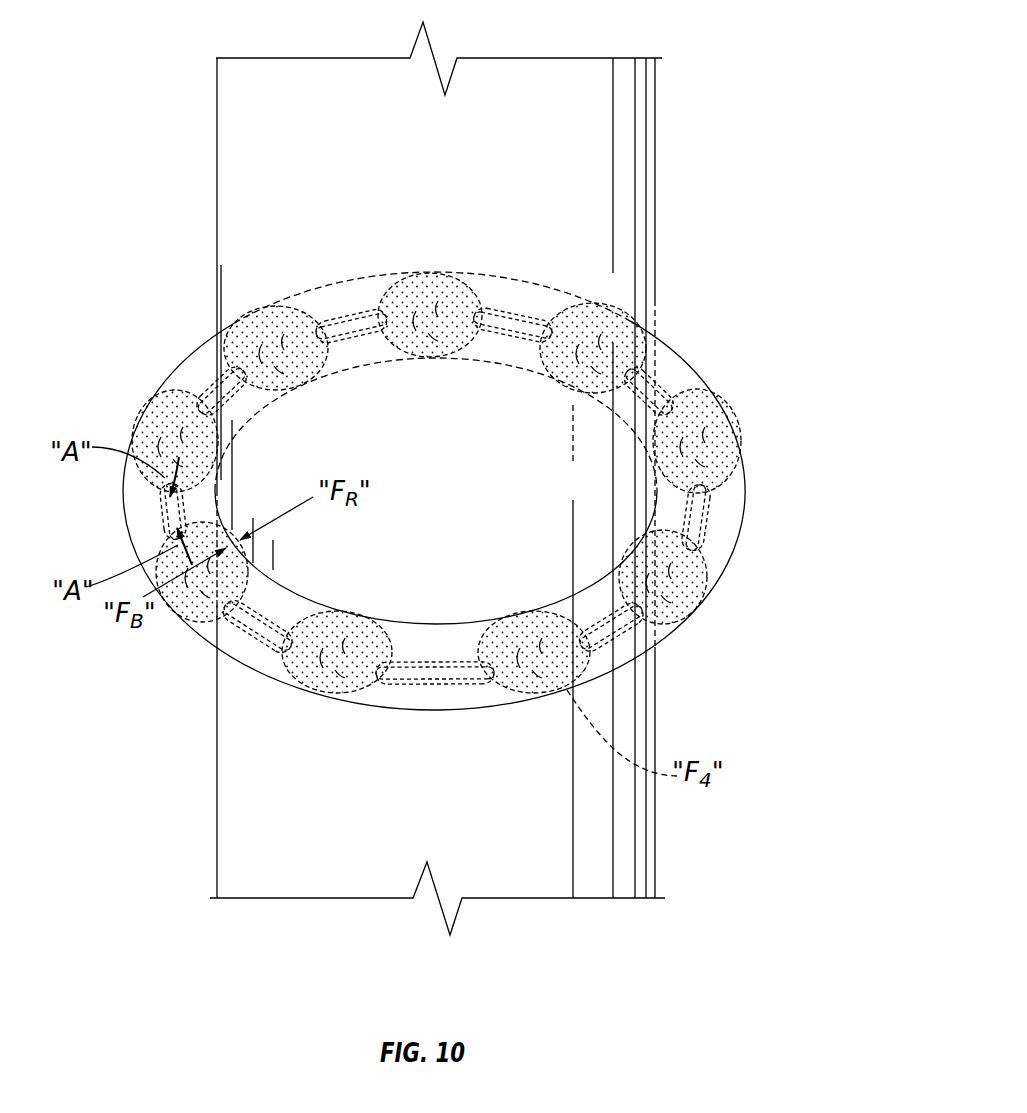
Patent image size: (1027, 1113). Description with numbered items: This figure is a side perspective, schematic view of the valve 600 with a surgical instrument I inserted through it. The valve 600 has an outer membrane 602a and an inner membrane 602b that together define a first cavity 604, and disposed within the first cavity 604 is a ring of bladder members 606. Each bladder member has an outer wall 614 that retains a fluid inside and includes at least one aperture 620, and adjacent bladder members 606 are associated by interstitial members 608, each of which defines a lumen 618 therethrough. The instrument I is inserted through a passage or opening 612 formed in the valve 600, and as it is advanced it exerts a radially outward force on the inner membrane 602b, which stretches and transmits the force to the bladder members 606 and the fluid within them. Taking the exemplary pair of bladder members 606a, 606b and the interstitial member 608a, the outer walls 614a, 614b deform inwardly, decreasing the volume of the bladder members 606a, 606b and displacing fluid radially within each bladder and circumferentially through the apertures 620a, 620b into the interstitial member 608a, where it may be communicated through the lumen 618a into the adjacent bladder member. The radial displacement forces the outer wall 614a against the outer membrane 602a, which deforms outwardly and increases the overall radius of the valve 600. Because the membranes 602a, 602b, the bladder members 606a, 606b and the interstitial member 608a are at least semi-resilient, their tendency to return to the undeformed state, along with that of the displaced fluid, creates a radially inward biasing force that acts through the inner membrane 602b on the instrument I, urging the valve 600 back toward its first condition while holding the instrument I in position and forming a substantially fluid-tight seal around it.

The valve 600 is at (687, 640).
The outer membrane 602a is at (744, 493).
The inner membrane 602b is at (700, 513).
The first cavity 604 is at (723, 513).
The bladder members 606 is at (583, 686).
The bladder member 606a is at (148, 393).
The bladder member 606b is at (162, 623).
The interstitial members 608 is at (452, 690).
The interstitial member 608a is at (165, 532).
The passage or opening 612 is at (543, 450).
The outer walls 614 is at (530, 625).
The outer wall 614a is at (185, 390).
The outer wall 614b is at (203, 633).
The lumen 618 is at (413, 690).
The lumen 618a is at (162, 512).
The aperture 620 is at (517, 682).
The apertures 620a is at (133, 425).
The second biasing member 620b is at (166, 537).
The surgical instrument I is at (215, 193).